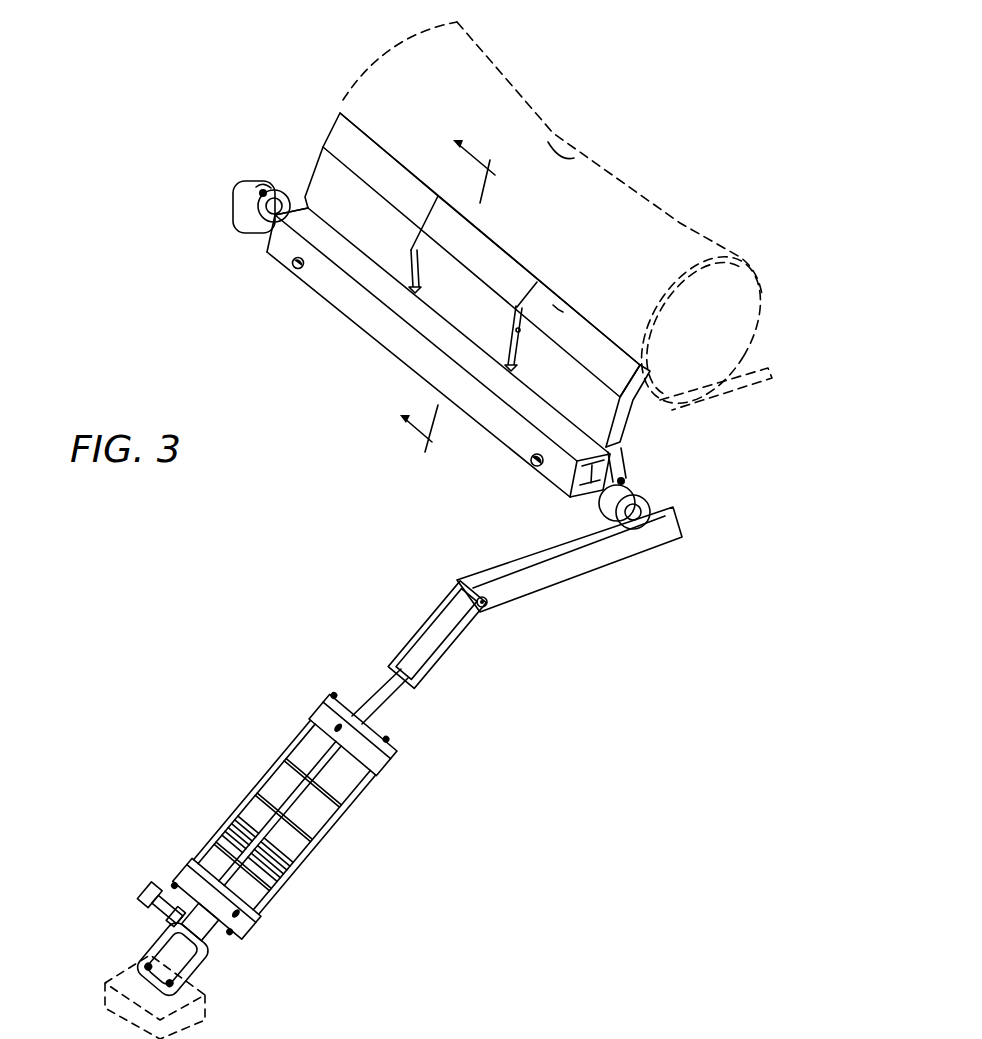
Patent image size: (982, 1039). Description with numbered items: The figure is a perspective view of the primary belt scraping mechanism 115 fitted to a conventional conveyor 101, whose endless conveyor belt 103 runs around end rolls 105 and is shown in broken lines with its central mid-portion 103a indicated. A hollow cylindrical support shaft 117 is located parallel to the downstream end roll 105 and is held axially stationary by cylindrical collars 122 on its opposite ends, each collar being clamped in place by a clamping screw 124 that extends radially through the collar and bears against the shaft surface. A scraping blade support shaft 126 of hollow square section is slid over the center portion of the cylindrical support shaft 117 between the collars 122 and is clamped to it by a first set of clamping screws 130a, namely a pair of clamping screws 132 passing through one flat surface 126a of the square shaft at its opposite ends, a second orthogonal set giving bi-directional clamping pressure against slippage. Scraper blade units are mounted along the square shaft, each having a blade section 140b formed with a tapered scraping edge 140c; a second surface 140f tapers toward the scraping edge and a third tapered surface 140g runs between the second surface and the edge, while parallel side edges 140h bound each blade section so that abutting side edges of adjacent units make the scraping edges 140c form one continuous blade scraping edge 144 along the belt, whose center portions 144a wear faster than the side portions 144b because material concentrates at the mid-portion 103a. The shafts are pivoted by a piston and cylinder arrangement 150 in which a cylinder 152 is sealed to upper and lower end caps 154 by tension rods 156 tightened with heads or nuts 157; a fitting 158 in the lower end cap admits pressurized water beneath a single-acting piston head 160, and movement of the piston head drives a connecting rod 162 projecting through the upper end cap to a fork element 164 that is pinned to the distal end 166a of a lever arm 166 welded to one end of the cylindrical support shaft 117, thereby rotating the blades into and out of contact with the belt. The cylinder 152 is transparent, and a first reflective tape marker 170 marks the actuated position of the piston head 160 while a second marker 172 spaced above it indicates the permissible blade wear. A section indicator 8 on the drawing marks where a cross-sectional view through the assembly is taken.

The conveyor 101 is at (335, 88).
The endless conveyor belt 103 is at (676, 238).
The mid-portion of the belt 103a is at (557, 152).
The end roll 105 is at (738, 326).
The primary belt scraping mechanism 115 is at (388, 583).
The hollow cylindrical support shaft 117 is at (592, 487).
The cylindrical collar 122 is at (234, 216).
The clamping screw 124 is at (263, 189).
The scraping blade support shaft 126 is at (413, 368).
The first flat surface 126a is at (367, 330).
The first set of clamping screws 130a is at (528, 475).
The clamping screw 132 is at (292, 264).
The blade section 140b is at (596, 411).
The tapered scraping edge 140c is at (596, 328).
The second surface 140f is at (537, 368).
The third tapered surface 140g is at (556, 306).
The side edge 140h is at (513, 337).
The continuous blade scraping edge 144 is at (472, 242).
The center portion of the scraping edge 144a is at (502, 244).
The side portion of the scraping edge 144b is at (378, 134).
The piston and cylinder arrangement 150 is at (266, 858).
The cylinder 152 is at (280, 813).
The end cap 154 is at (286, 816).
The tension rod 156 is at (317, 844).
The head or nut 157 is at (282, 814).
The fitting 158 is at (165, 935).
The piston head 160 is at (311, 839).
The connecting rod 162 is at (388, 695).
The fork element 164 is at (455, 634).
The lever arm 166 is at (633, 545).
The distal end of the lever arm 166a is at (480, 594).
The first marker reflective tape 170 is at (257, 848).
The second marker reflective tape 172 is at (277, 825).
The section line 8 is at (447, 302).